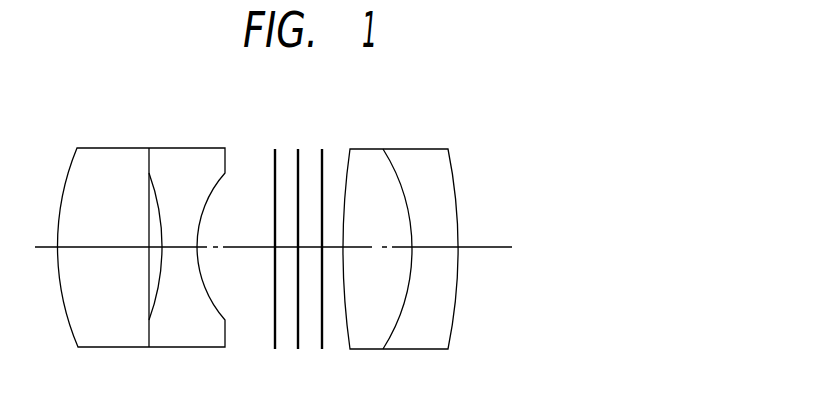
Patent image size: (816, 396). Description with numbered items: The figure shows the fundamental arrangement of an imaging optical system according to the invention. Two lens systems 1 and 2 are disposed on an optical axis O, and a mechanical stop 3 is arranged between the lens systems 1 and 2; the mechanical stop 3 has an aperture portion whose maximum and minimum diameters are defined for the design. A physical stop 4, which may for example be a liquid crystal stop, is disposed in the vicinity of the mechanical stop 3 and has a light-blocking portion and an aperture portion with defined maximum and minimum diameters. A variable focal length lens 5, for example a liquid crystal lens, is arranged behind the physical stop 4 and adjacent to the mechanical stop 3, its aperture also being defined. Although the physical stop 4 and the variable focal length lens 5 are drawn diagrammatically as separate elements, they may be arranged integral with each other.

The lens system 1 is at (92, 148).
The lens system 2 is at (433, 149).
The mechanical stop 3 is at (275, 322).
The physical stop 4 is at (298, 328).
The variable focal length lens 5 is at (322, 331).
The optical axis O is at (366, 250).